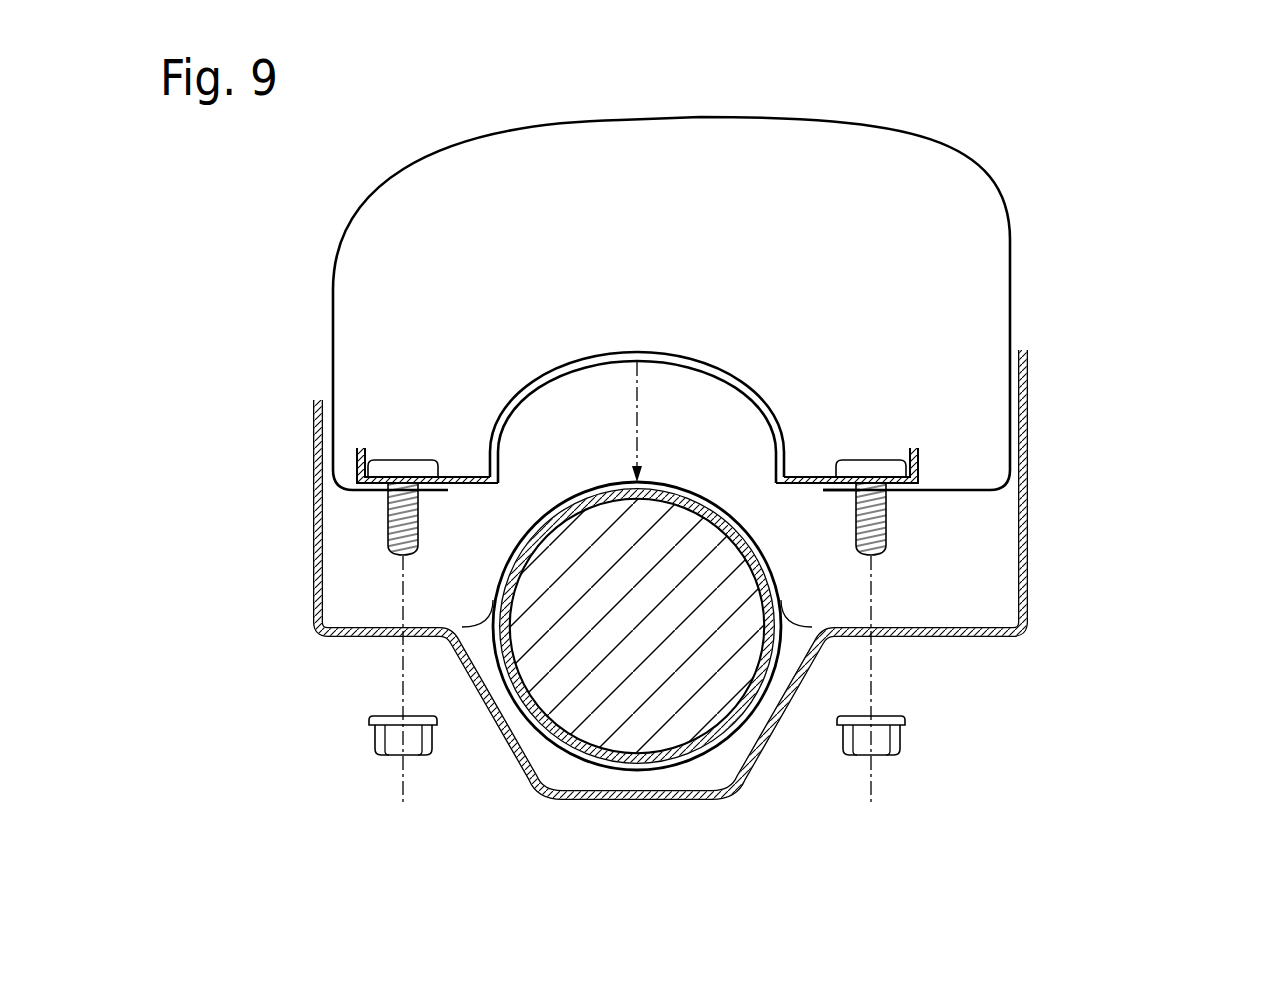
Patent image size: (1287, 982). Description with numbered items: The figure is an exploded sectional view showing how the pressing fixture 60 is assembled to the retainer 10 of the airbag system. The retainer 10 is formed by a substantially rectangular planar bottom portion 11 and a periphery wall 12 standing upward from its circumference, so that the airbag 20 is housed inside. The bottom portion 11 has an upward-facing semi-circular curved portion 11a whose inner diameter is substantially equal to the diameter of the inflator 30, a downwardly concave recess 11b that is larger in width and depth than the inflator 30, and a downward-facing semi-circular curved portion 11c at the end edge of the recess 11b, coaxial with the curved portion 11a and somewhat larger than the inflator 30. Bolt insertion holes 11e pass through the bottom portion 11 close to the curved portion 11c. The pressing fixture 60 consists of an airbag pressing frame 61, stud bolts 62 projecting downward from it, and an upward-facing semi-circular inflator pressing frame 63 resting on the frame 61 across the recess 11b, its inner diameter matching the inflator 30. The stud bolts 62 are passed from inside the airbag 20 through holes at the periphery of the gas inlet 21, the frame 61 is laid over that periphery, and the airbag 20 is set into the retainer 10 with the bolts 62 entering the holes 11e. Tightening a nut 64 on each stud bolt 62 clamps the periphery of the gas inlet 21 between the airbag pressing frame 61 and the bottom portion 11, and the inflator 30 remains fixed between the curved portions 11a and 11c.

The retainer 10 is at (750, 602).
The bottom portion 11 is at (995, 638).
The upward-facing semi-circular curved portion 11a is at (693, 481).
The recess 11b is at (752, 787).
The downward-facing semi-circular curved portion 11c is at (593, 770).
The bolt insertion hole 11e is at (397, 629).
The periphery wall 12 is at (312, 452).
The airbag 20 is at (946, 147).
The gas inlet 21 is at (822, 493).
The inflator 30 is at (567, 710).
The pressing fixture 60 is at (637, 383).
The airbag pressing frame 61 is at (808, 470).
The stud bolt 62 is at (418, 517).
The inflator pressing frame 63 is at (724, 378).
The nut 64 is at (372, 743).